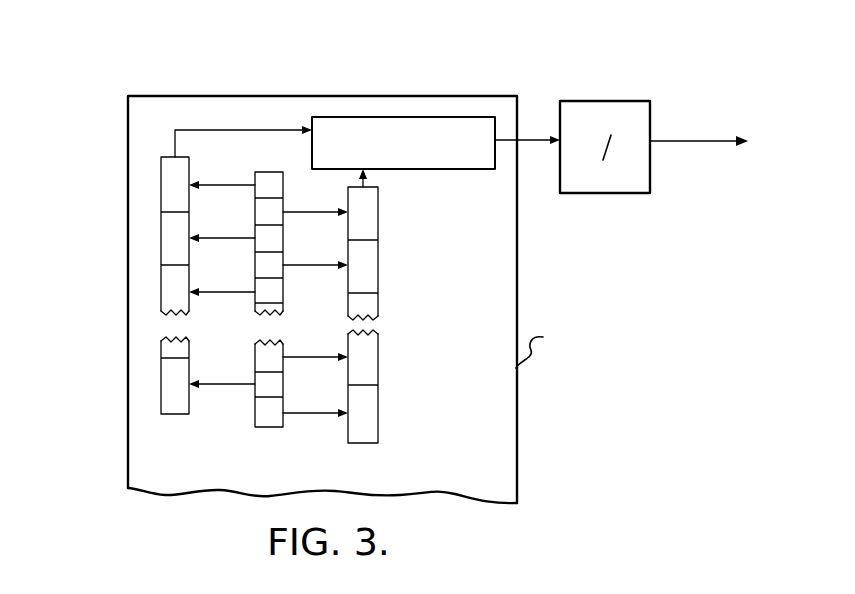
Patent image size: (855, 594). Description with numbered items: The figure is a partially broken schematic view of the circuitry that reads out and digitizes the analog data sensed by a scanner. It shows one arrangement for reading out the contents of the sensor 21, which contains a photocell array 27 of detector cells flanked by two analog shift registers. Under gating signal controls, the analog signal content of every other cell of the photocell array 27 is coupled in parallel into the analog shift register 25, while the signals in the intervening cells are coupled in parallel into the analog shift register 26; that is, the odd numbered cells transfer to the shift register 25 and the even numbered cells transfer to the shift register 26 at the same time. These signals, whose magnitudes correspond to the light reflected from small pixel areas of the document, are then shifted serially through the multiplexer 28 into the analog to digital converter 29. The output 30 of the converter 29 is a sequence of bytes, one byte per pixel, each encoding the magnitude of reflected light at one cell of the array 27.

The sensor 21 is at (279, 88).
The analog shift register 25 is at (150, 190).
The analog shift register 26 is at (367, 452).
The photocell array 27 is at (268, 440).
The multiplexer 28 is at (477, 170).
The analog to digital converter 29 is at (613, 193).
The output 30 is at (707, 142).